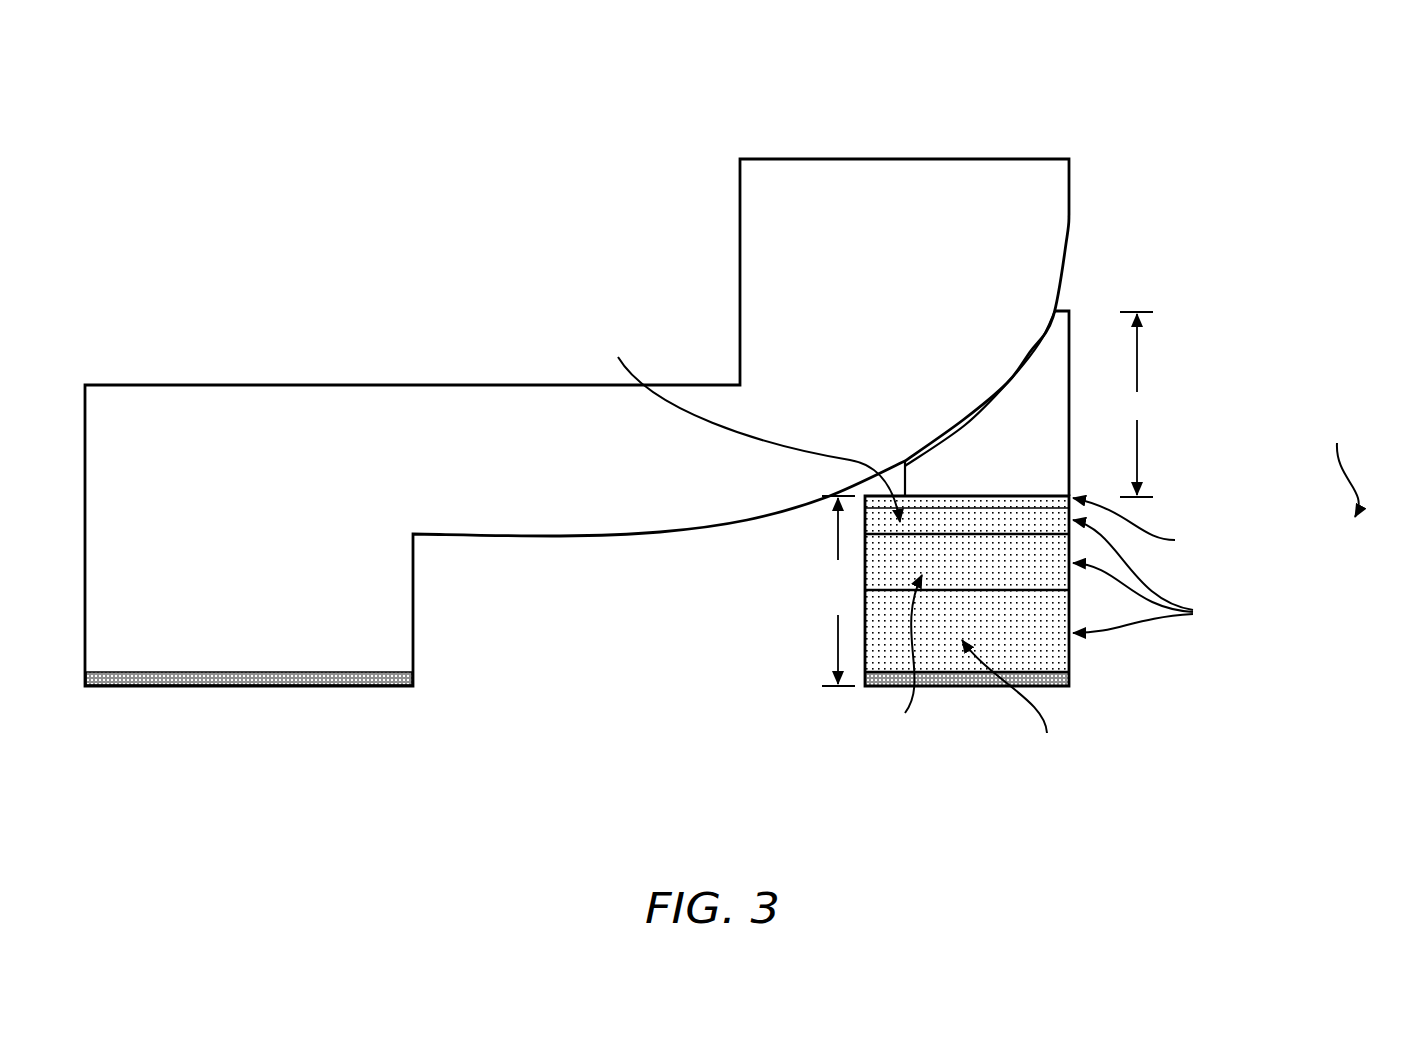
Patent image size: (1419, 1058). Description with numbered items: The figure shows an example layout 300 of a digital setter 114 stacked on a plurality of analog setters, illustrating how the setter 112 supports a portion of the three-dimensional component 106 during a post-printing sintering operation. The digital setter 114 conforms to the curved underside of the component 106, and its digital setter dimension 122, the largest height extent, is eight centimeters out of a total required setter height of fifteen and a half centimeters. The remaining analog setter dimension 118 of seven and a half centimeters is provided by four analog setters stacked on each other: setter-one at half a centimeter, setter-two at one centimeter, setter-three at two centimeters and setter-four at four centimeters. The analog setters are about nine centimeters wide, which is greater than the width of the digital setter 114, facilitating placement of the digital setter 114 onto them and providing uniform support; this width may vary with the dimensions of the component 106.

The layout 300 is at (902, 62).
The 3D component 106 is at (1069, 215).
The digital setter 114 is at (1069, 357).
The digital setter dimension 122 is at (1172, 403).
The setter 112 is at (1237, 458).
The analog setter dimension 118 is at (808, 589).